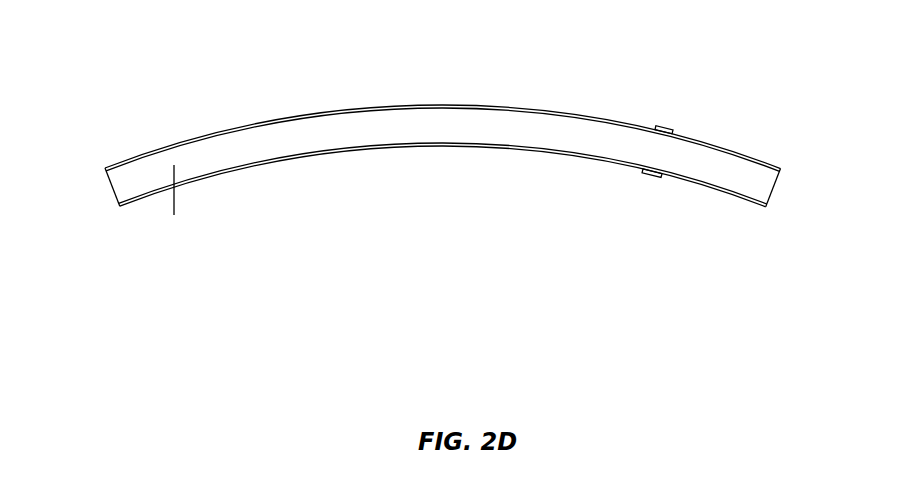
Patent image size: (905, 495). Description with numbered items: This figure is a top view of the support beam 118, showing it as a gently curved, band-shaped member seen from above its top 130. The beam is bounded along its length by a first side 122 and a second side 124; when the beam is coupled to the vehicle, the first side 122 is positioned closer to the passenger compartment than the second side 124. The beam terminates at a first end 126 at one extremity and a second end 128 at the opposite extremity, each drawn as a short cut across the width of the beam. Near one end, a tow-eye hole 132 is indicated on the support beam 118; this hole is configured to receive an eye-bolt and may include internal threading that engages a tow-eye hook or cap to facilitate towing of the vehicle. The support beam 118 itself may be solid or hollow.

The support beam 118 is at (441, 144).
The first side 122 is at (463, 152).
The second side 124 is at (483, 98).
The first end 126 is at (788, 196).
The second end 128 is at (100, 194).
The top 130 is at (174, 203).
The tow-eye hole 132 is at (662, 130).